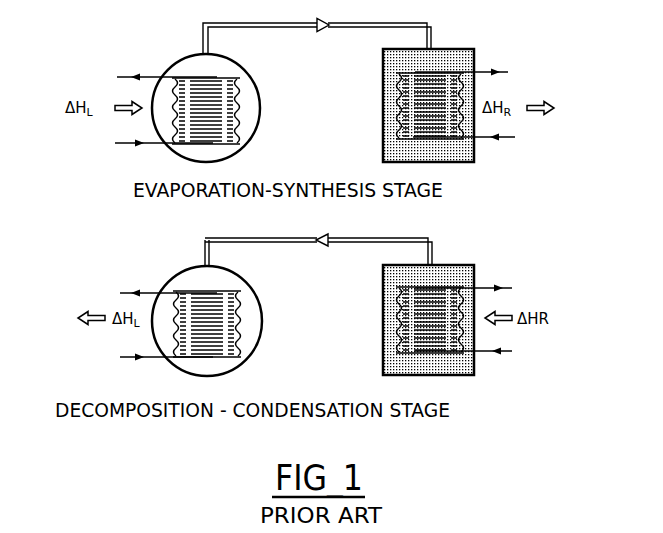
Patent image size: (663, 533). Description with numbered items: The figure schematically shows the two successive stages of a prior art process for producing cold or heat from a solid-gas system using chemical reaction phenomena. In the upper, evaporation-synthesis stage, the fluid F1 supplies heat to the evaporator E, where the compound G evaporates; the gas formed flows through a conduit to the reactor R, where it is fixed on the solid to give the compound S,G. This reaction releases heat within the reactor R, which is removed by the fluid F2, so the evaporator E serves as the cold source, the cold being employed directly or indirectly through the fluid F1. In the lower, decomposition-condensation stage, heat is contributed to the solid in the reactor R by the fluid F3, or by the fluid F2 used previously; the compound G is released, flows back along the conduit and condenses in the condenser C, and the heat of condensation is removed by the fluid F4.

The evaporator E is at (206, 108).
The condenser C is at (207, 321).
The reactor R is at (428, 212).
The gas compound G is at (317, 133).
The fluid F1 is at (155, 142).
The fluid F2 is at (474, 137).
The fluid F3 is at (495, 351).
The fluid F4 is at (153, 356).